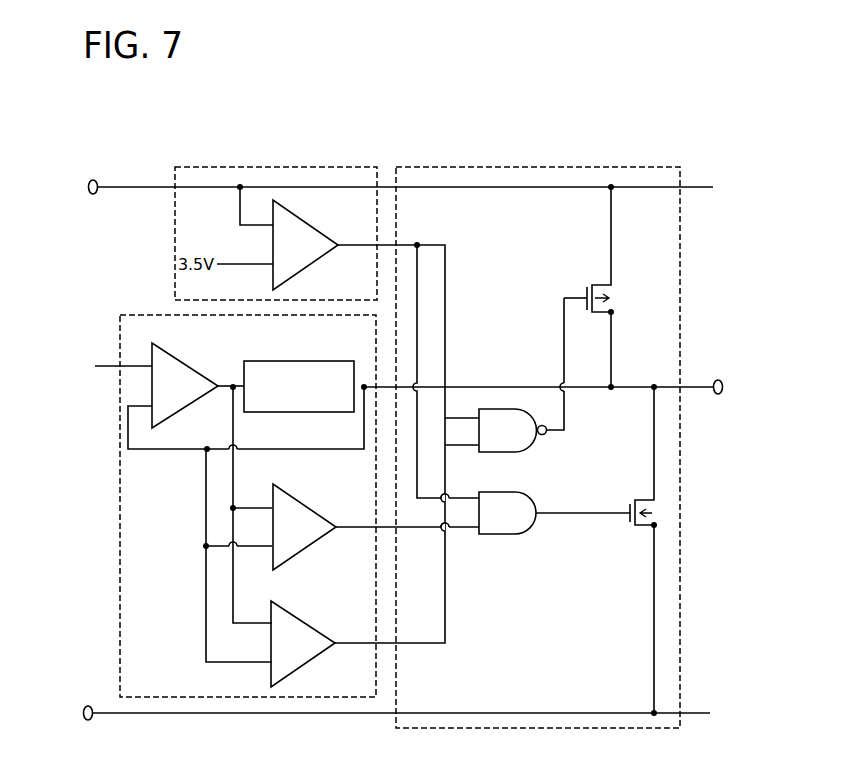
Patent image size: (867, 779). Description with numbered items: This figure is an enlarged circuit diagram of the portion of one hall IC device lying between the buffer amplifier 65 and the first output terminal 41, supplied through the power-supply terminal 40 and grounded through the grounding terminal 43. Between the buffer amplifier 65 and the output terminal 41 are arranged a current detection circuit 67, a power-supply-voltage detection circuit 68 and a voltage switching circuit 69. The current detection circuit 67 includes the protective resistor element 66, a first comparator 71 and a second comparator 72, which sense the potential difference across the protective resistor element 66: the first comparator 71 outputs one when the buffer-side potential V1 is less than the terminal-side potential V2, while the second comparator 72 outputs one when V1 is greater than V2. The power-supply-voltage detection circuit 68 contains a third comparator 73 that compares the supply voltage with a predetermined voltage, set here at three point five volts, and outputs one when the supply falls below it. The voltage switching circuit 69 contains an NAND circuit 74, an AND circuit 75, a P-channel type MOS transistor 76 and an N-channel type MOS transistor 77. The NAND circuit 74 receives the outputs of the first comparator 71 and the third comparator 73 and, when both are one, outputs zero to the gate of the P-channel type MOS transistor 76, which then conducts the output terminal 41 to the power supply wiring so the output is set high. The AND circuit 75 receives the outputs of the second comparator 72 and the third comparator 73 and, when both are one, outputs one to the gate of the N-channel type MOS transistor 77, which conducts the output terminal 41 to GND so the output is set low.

The power-supply terminal 40 is at (93, 194).
The first output terminal 41 is at (718, 394).
The grounding terminal 43 is at (88, 720).
The buffer amplifier 65 is at (192, 363).
The protective resistor element 66 is at (299, 361).
The current detection circuit 67 is at (118, 602).
The power-supply-voltage detection circuit 68 is at (345, 167).
The voltage switching circuit 69 is at (642, 167).
The first comparator 71 is at (300, 620).
The second comparator 72 is at (306, 505).
The third comparator 73 is at (325, 234).
The NAND circuit 74 is at (527, 453).
The AND circuit 75 is at (525, 535).
The P-channel type MOS transistor 76 is at (592, 315).
The N-channel type MOS transistor 77 is at (635, 500).